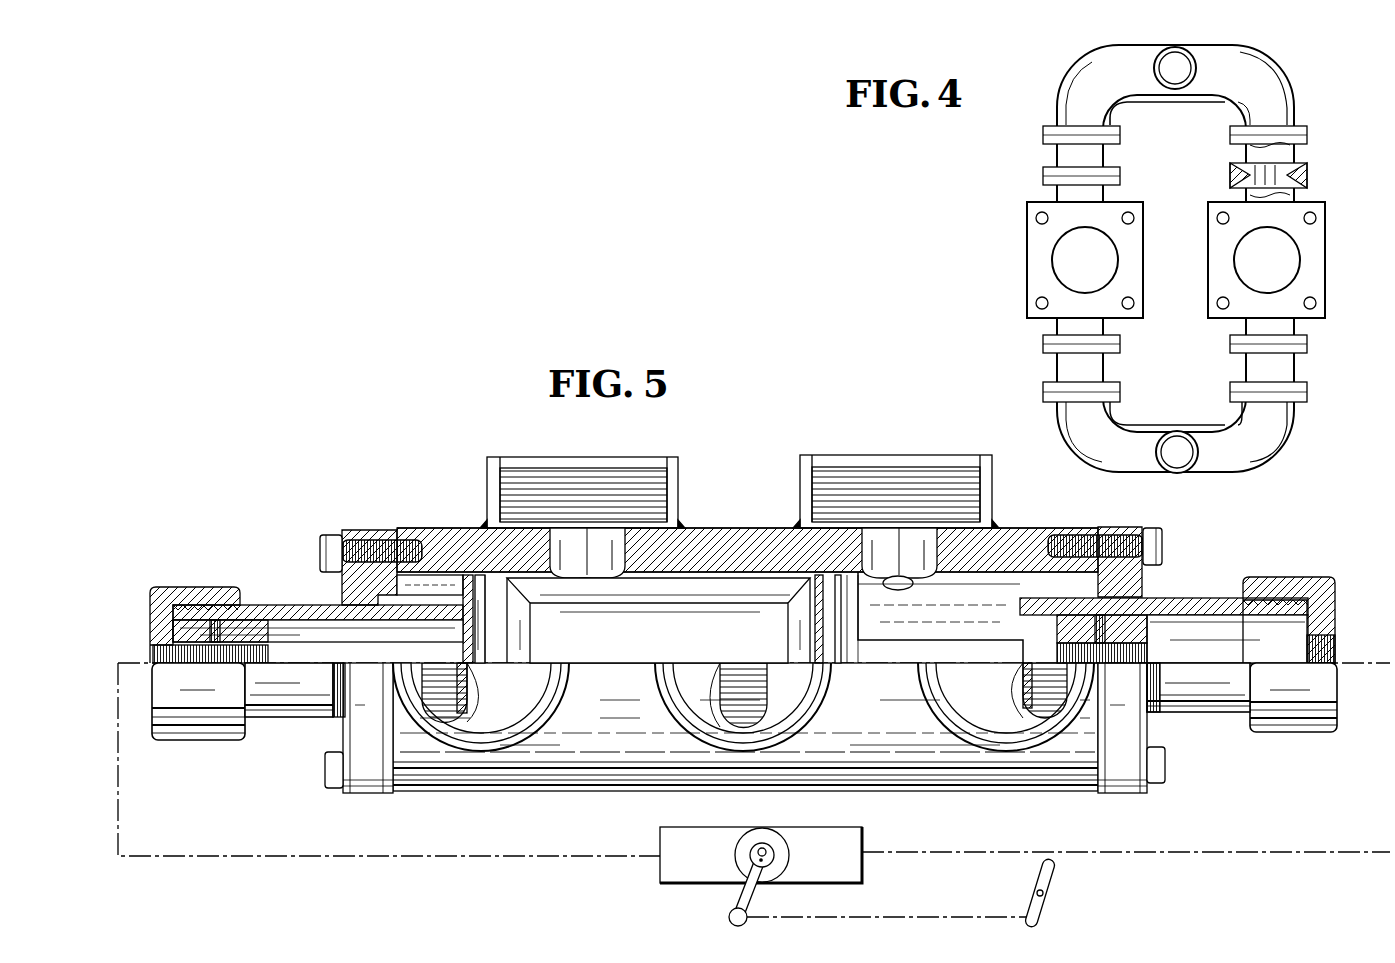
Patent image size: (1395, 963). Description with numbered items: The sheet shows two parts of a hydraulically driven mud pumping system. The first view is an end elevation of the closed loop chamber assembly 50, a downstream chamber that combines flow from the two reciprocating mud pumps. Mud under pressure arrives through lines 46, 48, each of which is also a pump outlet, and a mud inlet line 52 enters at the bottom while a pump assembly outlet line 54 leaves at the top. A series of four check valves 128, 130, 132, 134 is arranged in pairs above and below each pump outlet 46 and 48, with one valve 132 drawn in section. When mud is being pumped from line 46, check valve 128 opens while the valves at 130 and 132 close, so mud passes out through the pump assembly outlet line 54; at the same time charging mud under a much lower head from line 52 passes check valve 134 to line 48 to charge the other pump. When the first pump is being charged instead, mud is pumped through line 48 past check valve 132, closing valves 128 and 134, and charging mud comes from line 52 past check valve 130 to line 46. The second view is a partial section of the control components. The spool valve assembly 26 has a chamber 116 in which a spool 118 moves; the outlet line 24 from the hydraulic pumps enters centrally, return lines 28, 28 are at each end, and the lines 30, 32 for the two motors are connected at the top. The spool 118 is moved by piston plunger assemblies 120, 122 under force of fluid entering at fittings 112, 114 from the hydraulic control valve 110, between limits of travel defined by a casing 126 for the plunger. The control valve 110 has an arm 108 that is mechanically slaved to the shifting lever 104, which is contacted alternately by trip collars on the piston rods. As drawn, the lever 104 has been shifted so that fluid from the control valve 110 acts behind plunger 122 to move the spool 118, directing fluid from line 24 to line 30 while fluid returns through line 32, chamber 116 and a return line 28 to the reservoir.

In FIG. 5, the outlet line 24 is at (780, 716).
In FIG. 5, the spool valve assembly 26 is at (288, 496).
In FIG. 5, the return line means 28 is at (505, 720).
In FIG. 5, the line for motor 30 is at (668, 472).
In FIG. 5, the line for motor 32 is at (972, 470).
In FIG. 4, the mud line 46 is at (1060, 262).
In FIG. 4, the mud line 48 is at (1292, 260).
In FIG. 4, the closed loop chamber assembly 50 is at (998, 209).
In FIG. 4, the mud inlet line 52 is at (1182, 470).
In FIG. 4, the pump assembly outlet line 54 is at (1190, 52).
In FIG. 5, the shifting lever 104 is at (1052, 883).
In FIG. 5, the arm 108 is at (730, 916).
In FIG. 5, the hydraulic control valve 110 is at (662, 866).
In FIG. 5, the fitting 112 is at (150, 655).
In FIG. 5, the fitting 114 is at (1330, 655).
In FIG. 5, the chamber 116 is at (678, 745).
In FIG. 5, the spool 118 is at (688, 600).
In FIG. 5, the piston plunger assembly 120 is at (300, 640).
In FIG. 5, the piston plunger assembly 122 is at (965, 642).
In FIG. 5, the casing 126 is at (1230, 708).
In FIG. 4, the check valve 128 is at (1062, 173).
In FIG. 4, the check valve 130 is at (1062, 345).
In FIG. 4, the check valve 132 is at (1290, 173).
In FIG. 4, the check valve 134 is at (1288, 344).